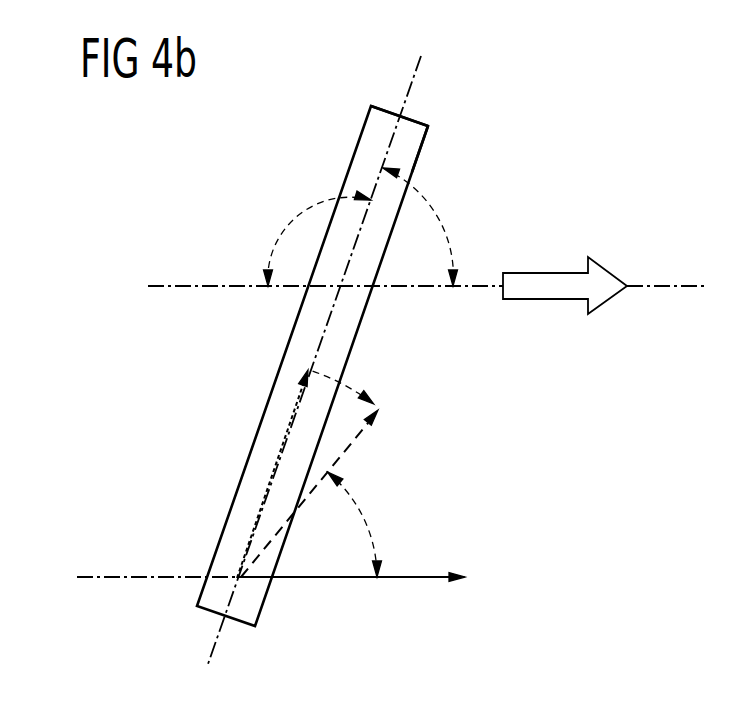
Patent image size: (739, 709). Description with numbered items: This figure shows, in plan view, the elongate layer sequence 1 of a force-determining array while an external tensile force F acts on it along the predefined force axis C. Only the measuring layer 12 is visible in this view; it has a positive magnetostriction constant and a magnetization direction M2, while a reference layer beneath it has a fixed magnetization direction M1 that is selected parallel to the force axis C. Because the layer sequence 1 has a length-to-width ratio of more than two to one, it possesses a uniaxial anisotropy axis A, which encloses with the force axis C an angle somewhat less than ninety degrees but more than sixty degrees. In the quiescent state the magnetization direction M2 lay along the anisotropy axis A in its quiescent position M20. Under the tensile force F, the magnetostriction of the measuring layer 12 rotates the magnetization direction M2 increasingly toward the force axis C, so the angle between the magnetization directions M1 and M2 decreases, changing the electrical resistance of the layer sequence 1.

The layer sequence 1 is at (363, 147).
The measuring layer 12 is at (415, 125).
The anisotropy axis A is at (412, 80).
The force axis C is at (198, 286).
The external force F is at (568, 233).
The magnetization direction of reference layer M1 is at (410, 578).
The magnetization direction of measuring layer M2 is at (356, 440).
The quiescent position of magnetization direction M2 M20 is at (270, 492).